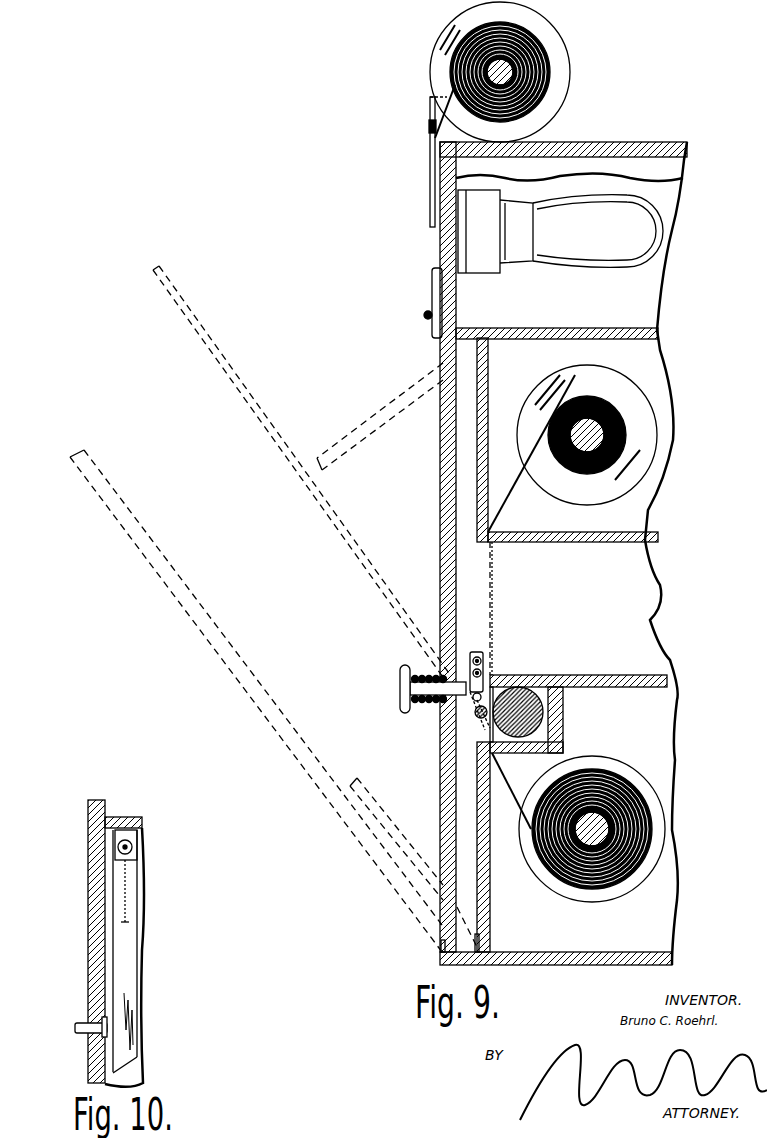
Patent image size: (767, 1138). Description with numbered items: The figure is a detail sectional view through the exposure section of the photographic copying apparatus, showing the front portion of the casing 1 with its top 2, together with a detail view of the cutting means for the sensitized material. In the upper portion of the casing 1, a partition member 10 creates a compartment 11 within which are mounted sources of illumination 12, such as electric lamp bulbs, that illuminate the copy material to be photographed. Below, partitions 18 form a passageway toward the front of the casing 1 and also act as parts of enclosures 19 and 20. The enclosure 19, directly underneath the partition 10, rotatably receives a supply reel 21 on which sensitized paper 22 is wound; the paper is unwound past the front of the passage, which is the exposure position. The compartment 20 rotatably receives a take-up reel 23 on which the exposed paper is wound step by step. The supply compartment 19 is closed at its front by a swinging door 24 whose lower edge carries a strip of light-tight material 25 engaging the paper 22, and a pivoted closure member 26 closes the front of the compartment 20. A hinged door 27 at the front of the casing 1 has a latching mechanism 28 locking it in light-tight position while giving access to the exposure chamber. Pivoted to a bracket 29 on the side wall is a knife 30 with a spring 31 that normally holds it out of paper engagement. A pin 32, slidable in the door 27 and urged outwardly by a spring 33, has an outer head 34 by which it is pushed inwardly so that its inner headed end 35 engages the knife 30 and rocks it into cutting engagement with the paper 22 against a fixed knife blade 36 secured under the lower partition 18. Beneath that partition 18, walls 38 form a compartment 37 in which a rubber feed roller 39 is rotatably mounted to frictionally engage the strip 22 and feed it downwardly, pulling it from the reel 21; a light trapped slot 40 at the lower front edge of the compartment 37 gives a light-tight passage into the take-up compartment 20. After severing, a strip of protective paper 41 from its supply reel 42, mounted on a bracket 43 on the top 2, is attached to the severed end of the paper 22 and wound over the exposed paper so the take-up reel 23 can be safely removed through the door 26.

In FIG. 9, the casing 1 is at (582, 957).
In FIG. 9, the top 2 is at (663, 145).
In FIG. 9, the partition member 10 is at (595, 328).
In FIG. 9, the compartment 11 is at (647, 278).
In FIG. 9, the sources of illumination 12 is at (642, 243).
In FIG. 9, the partitions 18 is at (552, 543).
In FIG. 9, the enclosure (supply compartment) 19 is at (630, 355).
In FIG. 9, the compartment (take-up compartment) 20 is at (633, 743).
In FIG. 9, the supply reel 21 is at (642, 417).
In FIG. 9, the sensitized paper 22 is at (513, 497).
In FIG. 9, the take-up reel 23 is at (650, 797).
In FIG. 9, the swinging door 24 is at (488, 407).
In FIG. 9, the strip of light-tight material 25 is at (497, 543).
In FIG. 9, the pivoted closure member 26 is at (485, 767).
In FIG. 9, the hinged door 27 is at (448, 475).
In FIG. 10, the hinged door 27 is at (97, 918).
In FIG. 9, the latching mechanism 28 is at (438, 327).
In FIG. 9, the bracket 29 is at (477, 652).
In FIG. 10, the bracket 29 is at (125, 822).
In FIG. 9, the knife 30 is at (492, 680).
In FIG. 10, the knife 30 is at (127, 947).
In FIG. 9, the spring 31 is at (482, 700).
In FIG. 10, the spring 31 is at (128, 897).
In FIG. 9, the pin 32 is at (432, 697).
In FIG. 10, the pin 32 is at (90, 1030).
In FIG. 9, the spring 33 is at (430, 678).
In FIG. 10, the spring 33 is at (107, 1030).
In FIG. 9, the head 34 is at (410, 682).
In FIG. 9, the inner headed end 35 is at (447, 667).
In FIG. 9, the fixed knife blade 36 is at (507, 678).
In FIG. 9, the compartment 37 is at (538, 697).
In FIG. 9, the walls 38 is at (563, 718).
In FIG. 9, the feed roller 39 is at (540, 723).
In FIG. 9, the light trapped slot 40 is at (500, 750).
In FIG. 9, the protective paper 41 is at (432, 163).
In FIG. 9, the supply reel 42 is at (557, 62).
In FIG. 9, the bracket 43 is at (552, 135).